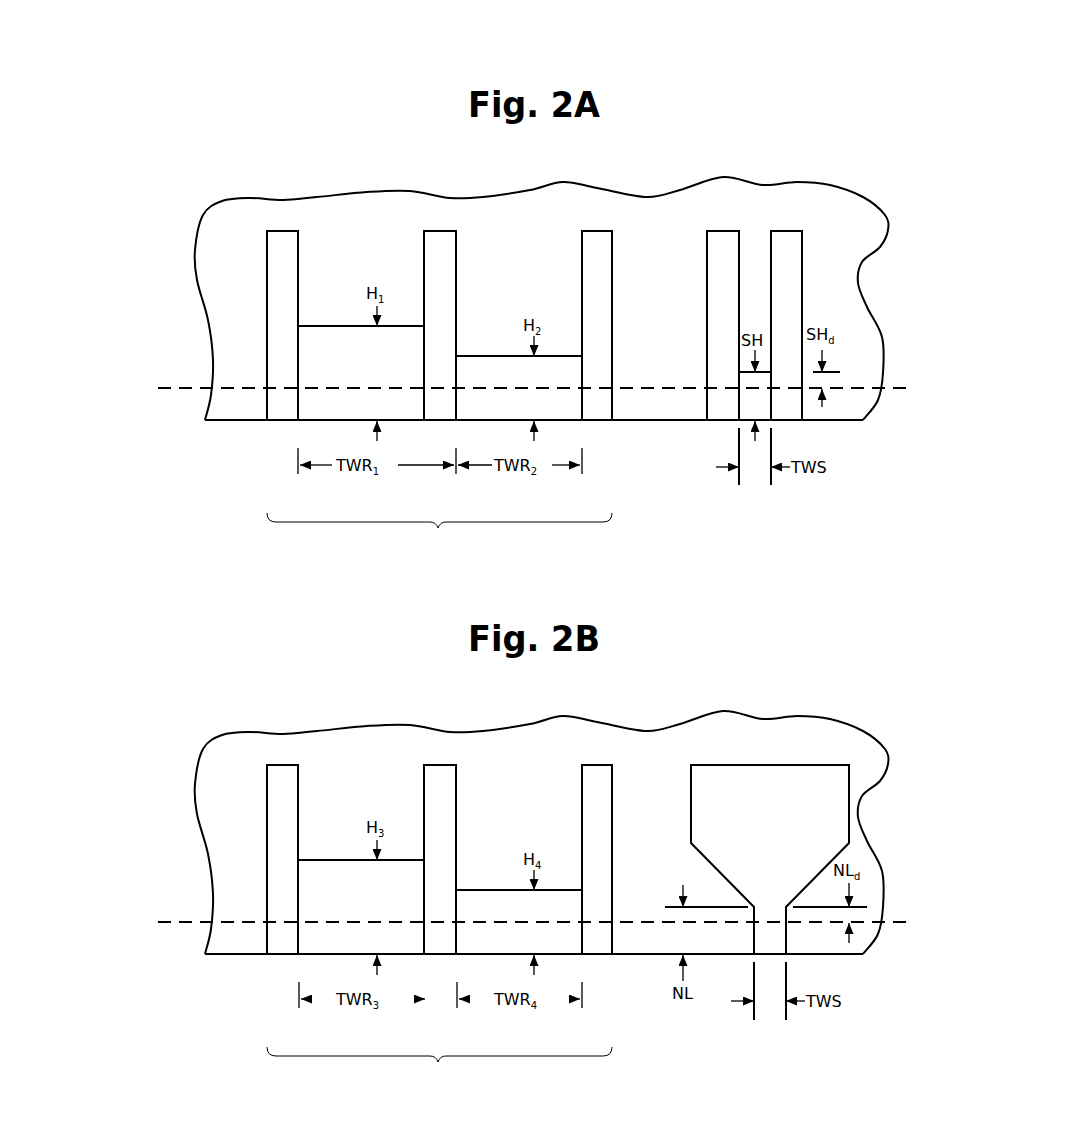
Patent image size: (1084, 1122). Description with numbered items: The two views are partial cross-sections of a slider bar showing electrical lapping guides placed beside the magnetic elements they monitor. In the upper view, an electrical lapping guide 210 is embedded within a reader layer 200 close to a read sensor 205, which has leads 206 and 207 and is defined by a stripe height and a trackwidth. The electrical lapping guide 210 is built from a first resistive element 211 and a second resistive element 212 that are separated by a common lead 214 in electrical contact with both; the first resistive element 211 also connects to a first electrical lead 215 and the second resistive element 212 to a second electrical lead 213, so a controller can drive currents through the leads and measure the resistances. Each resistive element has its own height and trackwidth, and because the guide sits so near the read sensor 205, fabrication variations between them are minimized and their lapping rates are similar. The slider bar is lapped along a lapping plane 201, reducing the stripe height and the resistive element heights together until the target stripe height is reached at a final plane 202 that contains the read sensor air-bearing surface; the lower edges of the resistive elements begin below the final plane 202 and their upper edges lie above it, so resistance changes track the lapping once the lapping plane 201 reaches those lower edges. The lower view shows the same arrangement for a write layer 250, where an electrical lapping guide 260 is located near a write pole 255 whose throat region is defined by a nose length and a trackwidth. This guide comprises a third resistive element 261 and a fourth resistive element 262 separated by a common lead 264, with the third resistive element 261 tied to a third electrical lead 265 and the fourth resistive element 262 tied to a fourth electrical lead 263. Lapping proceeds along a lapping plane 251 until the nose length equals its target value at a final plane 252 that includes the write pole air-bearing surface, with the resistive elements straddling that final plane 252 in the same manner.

In FIG. 2A, the reader layer 200 is at (872, 148).
In FIG. 2A, the lapping plane 201 is at (218, 421).
In FIG. 2A, the final plane 202 is at (499, 366).
In FIG. 2A, the read sensor 205 is at (806, 411).
In FIG. 2A, the lead 206 is at (839, 325).
In FIG. 2A, the lead 207 is at (686, 325).
In FIG. 2A, the electrical lapping guide 210 is at (439, 543).
In FIG. 2A, the first resistive element 211 is at (361, 348).
In FIG. 2A, the second resistive element 212 is at (519, 371).
In FIG. 2A, the second electrical lead 213 is at (560, 325).
In FIG. 2A, the common lead 214 is at (475, 325).
In FIG. 2A, the first electrical lead 215 is at (320, 325).
In FIG. 2B, the write layer 250 is at (872, 682).
In FIG. 2B, the lapping plane 251 is at (218, 955).
In FIG. 2B, the final plane 252 is at (499, 900).
In FIG. 2B, the write pole 255 is at (770, 859).
In FIG. 2B, the electrical lapping guide 260 is at (439, 1077).
In FIG. 2B, the third resistive element 261 is at (361, 882).
In FIG. 2B, the fourth resistive element 262 is at (519, 905).
In FIG. 2B, the fourth electrical lead 263 is at (560, 859).
In FIG. 2B, the common lead 264 is at (475, 859).
In FIG. 2B, the third electrical lead 265 is at (320, 859).